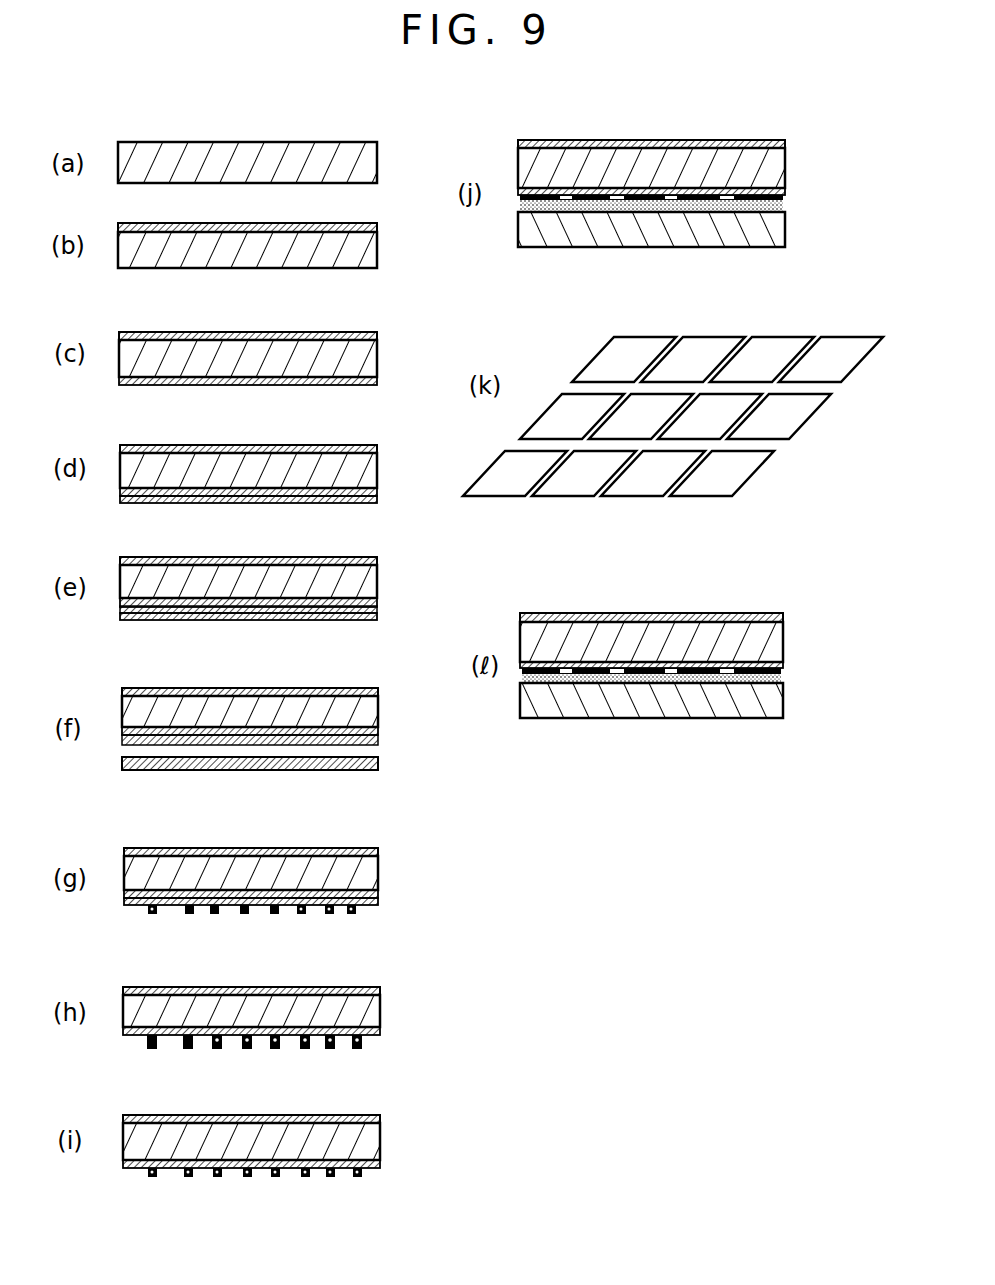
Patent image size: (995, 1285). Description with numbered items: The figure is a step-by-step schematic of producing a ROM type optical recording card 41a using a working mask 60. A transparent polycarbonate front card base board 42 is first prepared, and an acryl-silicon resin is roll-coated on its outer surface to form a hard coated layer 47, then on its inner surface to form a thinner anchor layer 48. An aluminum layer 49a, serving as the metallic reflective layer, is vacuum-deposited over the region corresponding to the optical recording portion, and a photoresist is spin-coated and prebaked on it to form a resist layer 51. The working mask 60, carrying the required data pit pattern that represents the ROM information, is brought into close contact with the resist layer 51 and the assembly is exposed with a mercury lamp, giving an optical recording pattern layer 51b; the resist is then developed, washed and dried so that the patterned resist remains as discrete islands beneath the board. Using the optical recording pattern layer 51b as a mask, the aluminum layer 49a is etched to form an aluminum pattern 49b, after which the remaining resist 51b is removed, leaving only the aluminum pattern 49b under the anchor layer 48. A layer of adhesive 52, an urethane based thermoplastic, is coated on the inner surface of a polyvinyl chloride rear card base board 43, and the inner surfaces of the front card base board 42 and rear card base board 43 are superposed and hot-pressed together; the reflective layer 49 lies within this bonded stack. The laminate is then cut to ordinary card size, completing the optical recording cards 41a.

The front card base board 42 is at (481, 630).
The hard coated layer 47 is at (481, 603).
The anchor layer 48 is at (452, 651).
The photosensitive layer 49 is at (483, 494).
The aluminum layer 49a is at (285, 727).
The aluminum pattern 49b is at (503, 947).
The resist layer 51 is at (249, 708).
The optical recording pattern layer 51b is at (167, 929).
The working mask 60 is at (220, 768).
The adhesive 52 is at (639, 482).
The rear card base board 43 is at (651, 491).
The ROM type optical recording card 41a is at (679, 543).